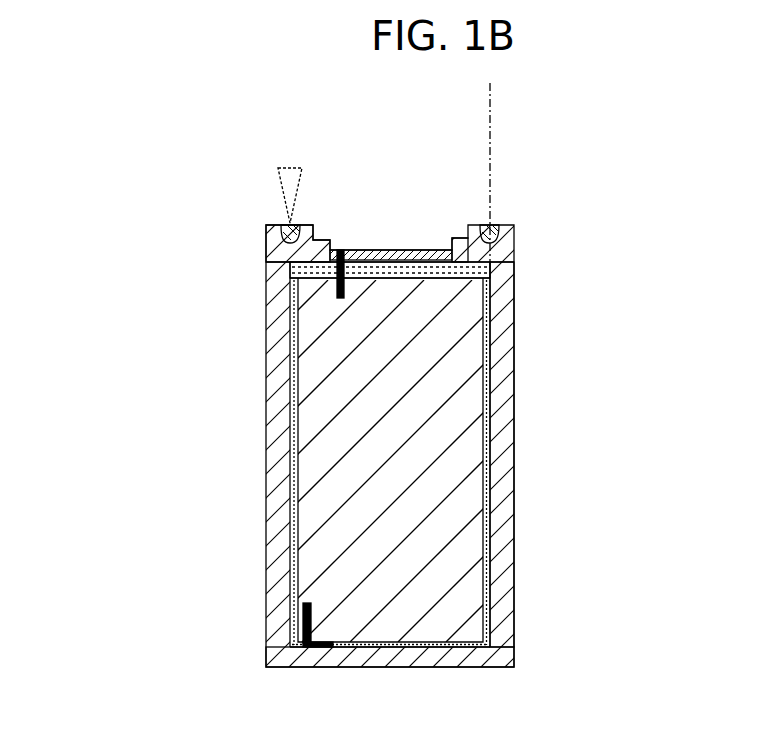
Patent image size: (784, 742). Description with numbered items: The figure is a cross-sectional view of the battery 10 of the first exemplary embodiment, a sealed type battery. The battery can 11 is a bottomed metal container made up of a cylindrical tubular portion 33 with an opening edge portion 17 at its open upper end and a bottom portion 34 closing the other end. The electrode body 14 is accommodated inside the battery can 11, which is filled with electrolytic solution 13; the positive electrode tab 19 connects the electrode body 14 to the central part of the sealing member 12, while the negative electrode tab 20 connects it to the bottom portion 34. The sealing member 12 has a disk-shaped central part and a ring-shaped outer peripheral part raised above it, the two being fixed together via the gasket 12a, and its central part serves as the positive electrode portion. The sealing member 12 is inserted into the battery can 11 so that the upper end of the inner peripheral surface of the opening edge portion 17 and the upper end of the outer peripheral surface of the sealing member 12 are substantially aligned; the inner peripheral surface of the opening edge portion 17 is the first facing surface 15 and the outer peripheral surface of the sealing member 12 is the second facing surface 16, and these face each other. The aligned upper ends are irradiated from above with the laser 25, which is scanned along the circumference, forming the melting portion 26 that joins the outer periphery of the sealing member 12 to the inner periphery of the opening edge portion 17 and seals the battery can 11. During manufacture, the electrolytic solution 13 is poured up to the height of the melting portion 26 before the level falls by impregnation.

The battery 10 is at (638, 174).
The battery can 11 is at (677, 565).
The sealing member 12 is at (456, 238).
The gasket 12a is at (470, 254).
The electrolytic solution 13 is at (303, 268).
The electrode body 14 is at (365, 643).
The first facing surface 15 is at (490, 121).
The second facing surface 16 is at (490, 121).
The opening edge portion 17 is at (266, 236).
The positive electrode tab 19 is at (337, 298).
The negative electrode tab 20 is at (305, 613).
The laser 25 is at (288, 177).
The melting portion 26 is at (292, 224).
The tubular portion 33 is at (514, 620).
The bottom portion 34 is at (467, 667).